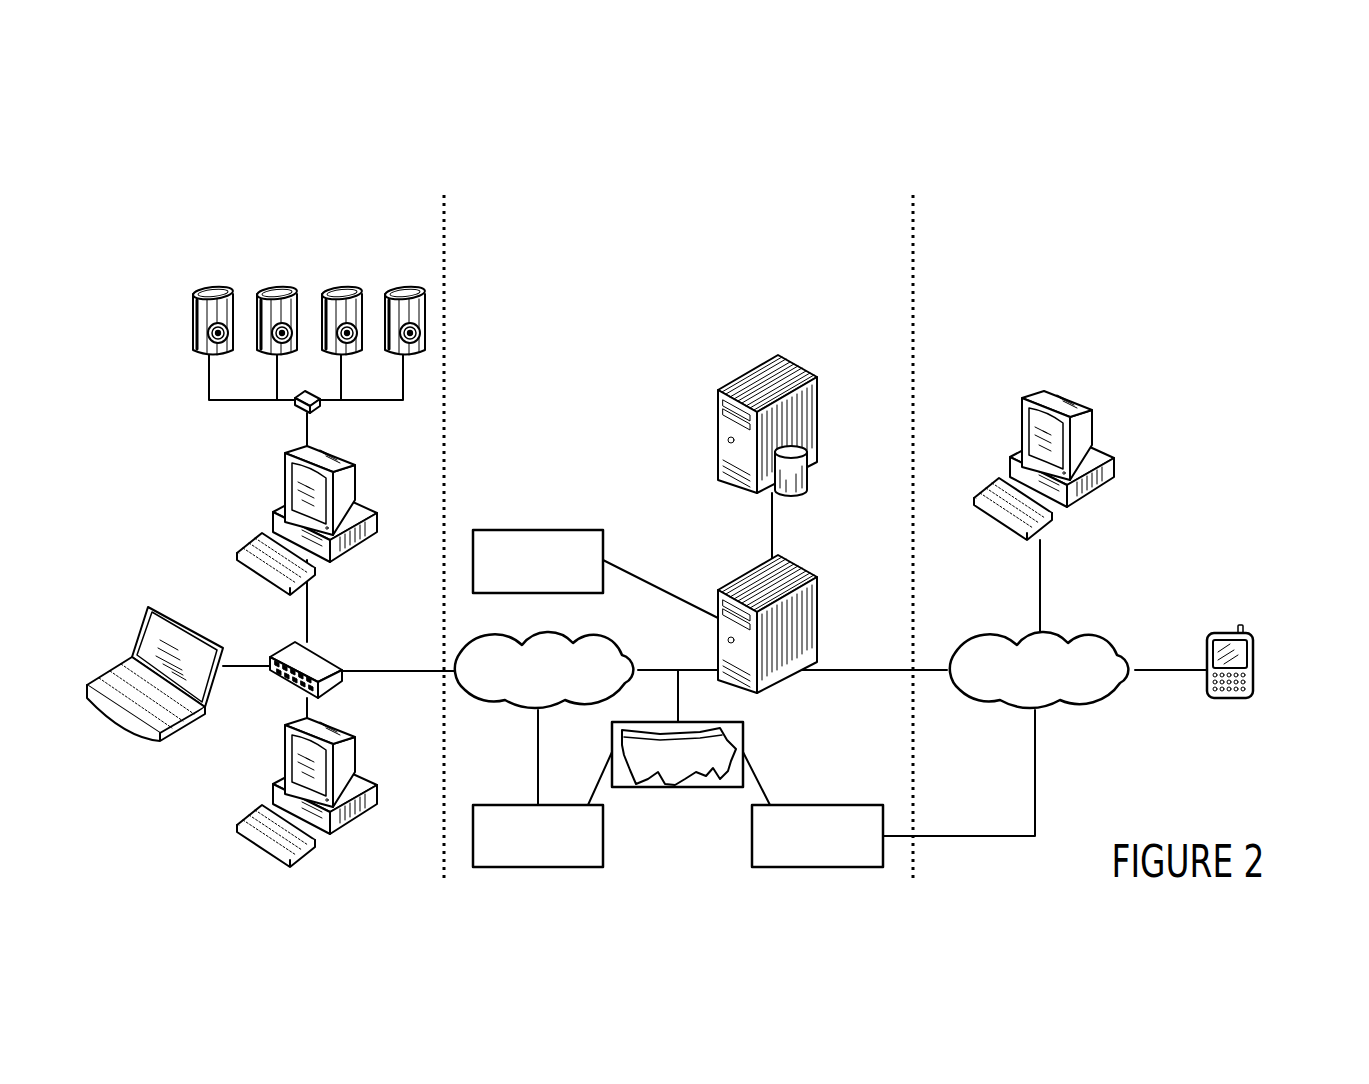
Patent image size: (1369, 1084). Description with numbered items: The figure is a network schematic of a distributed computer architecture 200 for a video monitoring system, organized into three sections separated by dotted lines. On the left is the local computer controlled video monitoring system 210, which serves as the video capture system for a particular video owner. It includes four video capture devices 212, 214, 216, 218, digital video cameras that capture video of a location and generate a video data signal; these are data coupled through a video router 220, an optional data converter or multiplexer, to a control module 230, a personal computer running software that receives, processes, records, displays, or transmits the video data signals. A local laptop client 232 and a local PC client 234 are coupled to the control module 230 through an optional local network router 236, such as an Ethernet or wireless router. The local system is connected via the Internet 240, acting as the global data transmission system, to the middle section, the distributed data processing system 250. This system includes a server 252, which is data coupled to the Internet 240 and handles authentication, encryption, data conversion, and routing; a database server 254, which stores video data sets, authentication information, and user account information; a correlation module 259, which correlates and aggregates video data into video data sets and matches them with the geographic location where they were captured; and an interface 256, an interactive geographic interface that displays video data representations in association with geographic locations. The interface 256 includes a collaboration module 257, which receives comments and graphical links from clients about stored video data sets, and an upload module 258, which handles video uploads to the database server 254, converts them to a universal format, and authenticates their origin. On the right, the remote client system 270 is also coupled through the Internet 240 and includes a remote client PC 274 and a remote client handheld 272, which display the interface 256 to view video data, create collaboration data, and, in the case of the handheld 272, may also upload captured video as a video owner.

The distributed computer architecture 200 is at (1266, 183).
The computer controlled video monitoring system 210 is at (303, 241).
The video capture device 212 is at (193, 322).
The video capture device 214 is at (257, 326).
The video capture device 216 is at (320, 326).
The video capture device 218 is at (383, 326).
The video router 220 is at (295, 409).
The control module 230 is at (290, 488).
The local laptop client 232 is at (112, 675).
The local PC client 234 is at (243, 840).
The local network router 236 is at (330, 682).
The Internet 240 is at (486, 709).
The distributed data processing system 250 is at (710, 283).
The server 252 is at (820, 620).
The database server 254 is at (782, 376).
The interface 256 is at (612, 745).
The collaboration module 257 is at (822, 805).
The upload module 258 is at (512, 805).
The correlation module 259 is at (538, 530).
The remote client system 270 is at (1138, 283).
The remote client handheld 272 is at (1255, 666).
The remote client PC 274 is at (1097, 452).